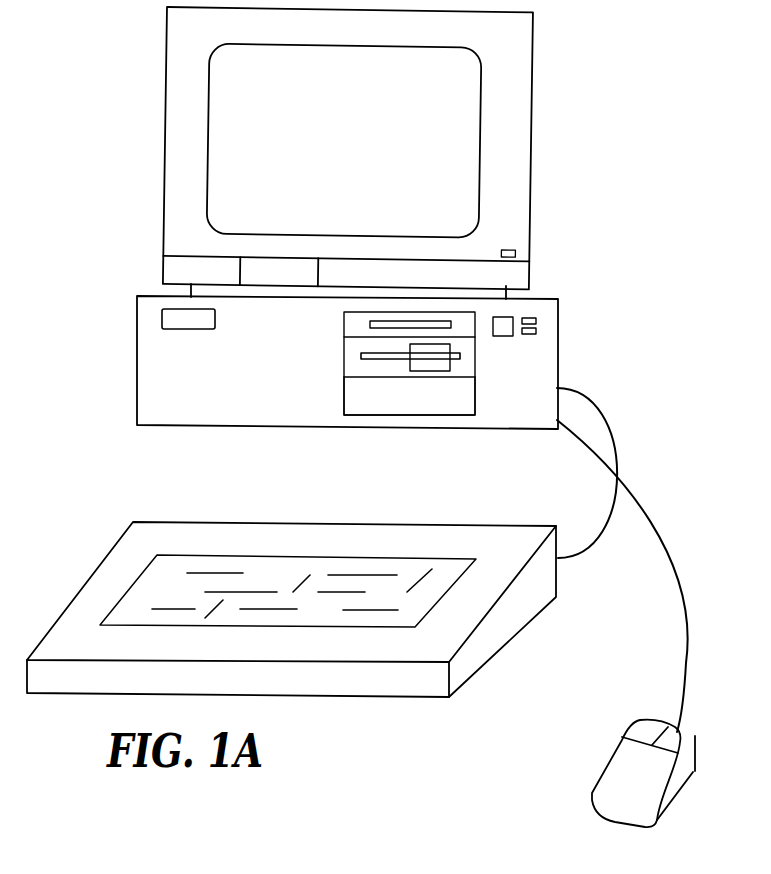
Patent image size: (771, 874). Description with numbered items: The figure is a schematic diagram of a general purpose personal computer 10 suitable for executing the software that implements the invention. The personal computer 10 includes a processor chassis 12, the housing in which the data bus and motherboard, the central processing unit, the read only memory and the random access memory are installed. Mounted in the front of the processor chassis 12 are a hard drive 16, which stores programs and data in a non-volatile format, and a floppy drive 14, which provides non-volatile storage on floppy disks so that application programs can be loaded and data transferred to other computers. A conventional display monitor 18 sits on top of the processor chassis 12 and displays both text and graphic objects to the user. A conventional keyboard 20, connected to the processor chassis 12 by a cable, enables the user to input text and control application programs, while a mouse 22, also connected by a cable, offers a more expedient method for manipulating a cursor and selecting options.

The personal computer 10 is at (387, 417).
The processor chassis 12 is at (383, 387).
The floppy drive 14 is at (463, 367).
The hard drive 16 is at (397, 402).
The display monitor 18 is at (525, 121).
The keyboard 20 is at (503, 633).
The mouse 22 is at (680, 777).